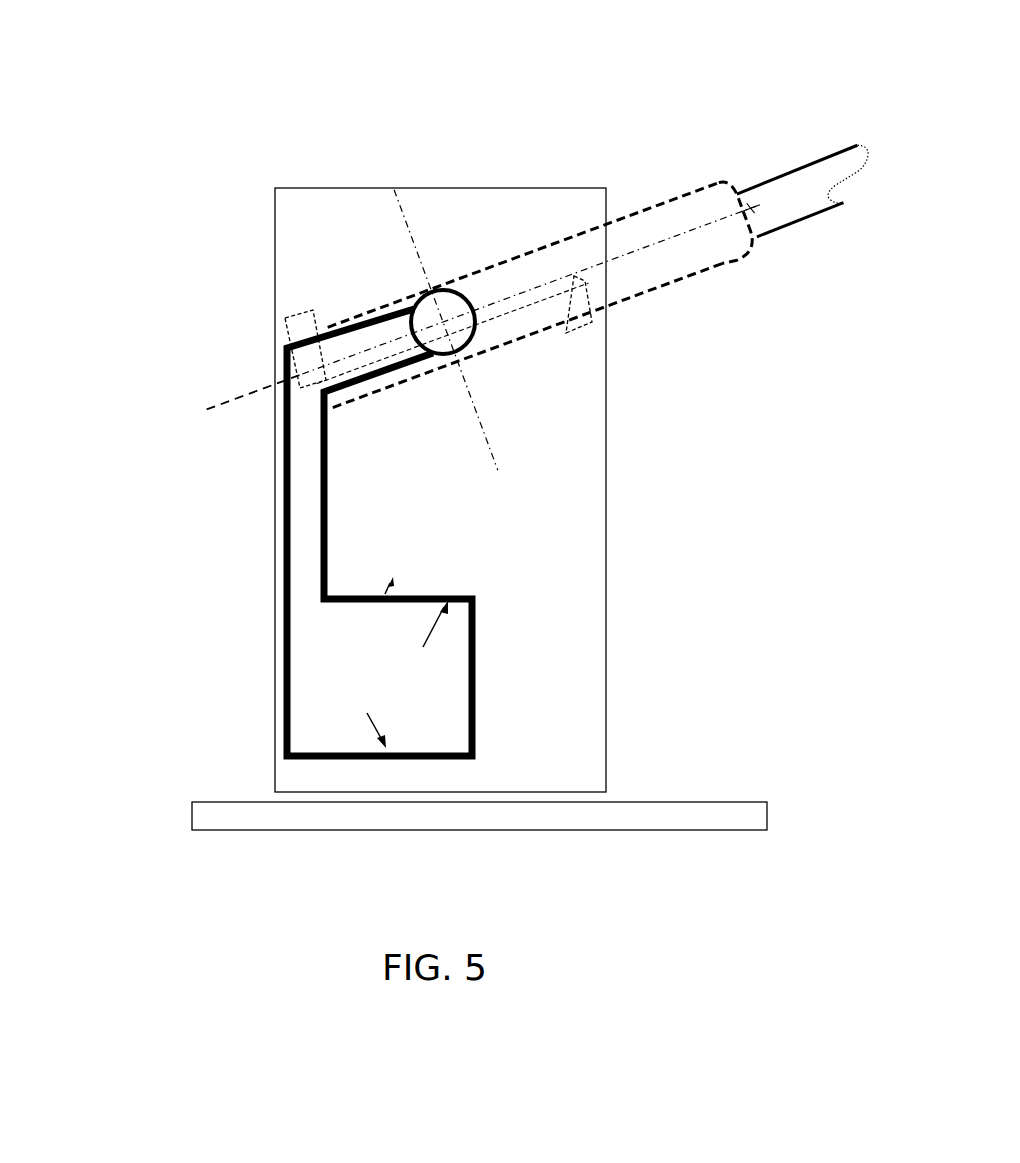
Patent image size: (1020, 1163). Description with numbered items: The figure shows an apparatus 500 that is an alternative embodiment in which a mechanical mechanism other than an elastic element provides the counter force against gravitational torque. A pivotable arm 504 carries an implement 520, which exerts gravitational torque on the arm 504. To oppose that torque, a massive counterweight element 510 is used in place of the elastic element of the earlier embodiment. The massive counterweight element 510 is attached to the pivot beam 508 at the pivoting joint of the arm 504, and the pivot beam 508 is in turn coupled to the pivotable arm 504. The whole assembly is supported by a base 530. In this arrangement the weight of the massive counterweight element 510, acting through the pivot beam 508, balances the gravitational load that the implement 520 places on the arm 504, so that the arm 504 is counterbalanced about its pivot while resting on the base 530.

The apparatus 500 is at (162, 70).
The pivotable arm 504 is at (507, 320).
The pivot beam 508 is at (443, 292).
The massive counterweight element 510 is at (327, 608).
The implement 520 is at (658, 204).
The base 530 is at (590, 820).